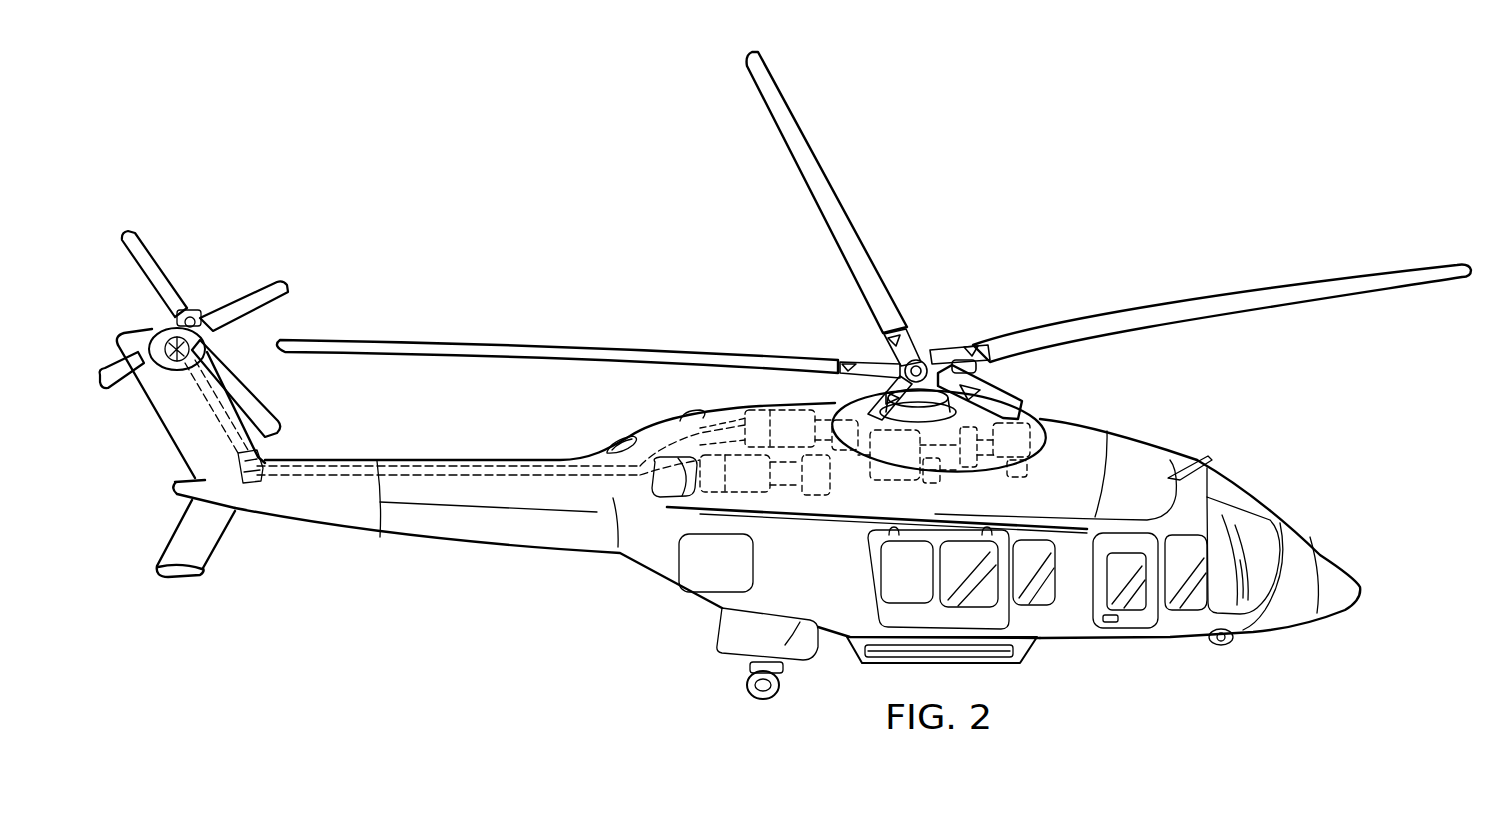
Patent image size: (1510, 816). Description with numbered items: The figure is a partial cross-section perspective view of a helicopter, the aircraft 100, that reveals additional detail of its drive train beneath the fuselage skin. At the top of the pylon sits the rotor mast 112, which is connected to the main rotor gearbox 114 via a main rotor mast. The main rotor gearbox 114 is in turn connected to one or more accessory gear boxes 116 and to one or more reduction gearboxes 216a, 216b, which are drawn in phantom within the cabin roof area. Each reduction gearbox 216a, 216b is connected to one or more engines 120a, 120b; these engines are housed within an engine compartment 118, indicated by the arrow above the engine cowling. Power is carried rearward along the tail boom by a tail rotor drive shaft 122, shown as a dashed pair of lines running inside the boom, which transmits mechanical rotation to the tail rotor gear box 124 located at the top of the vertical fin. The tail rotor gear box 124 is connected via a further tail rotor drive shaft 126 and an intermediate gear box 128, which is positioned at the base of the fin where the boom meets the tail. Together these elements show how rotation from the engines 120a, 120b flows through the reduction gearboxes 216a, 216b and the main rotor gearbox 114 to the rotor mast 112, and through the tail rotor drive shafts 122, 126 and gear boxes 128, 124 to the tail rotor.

The aircraft 100 is at (1152, 99).
The rotor mast 112 is at (890, 475).
The main rotor gearbox 114 is at (928, 478).
The accessory gear box 116 is at (1013, 463).
The engine compartment 118 is at (802, 404).
The engine 120a is at (765, 475).
The engine 120b is at (778, 410).
The tail rotor drive shaft 122 is at (466, 466).
The tail rotor gear box 124 is at (155, 328).
The tail rotor drive shaft 126 is at (238, 404).
The intermediate gear box 128 is at (247, 481).
The reduction gearbox 216a is at (828, 467).
The reduction gearbox 216b is at (842, 423).